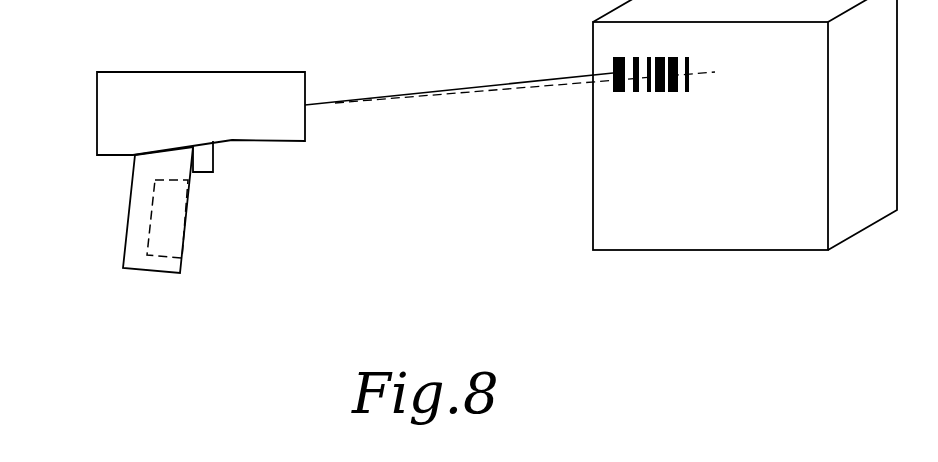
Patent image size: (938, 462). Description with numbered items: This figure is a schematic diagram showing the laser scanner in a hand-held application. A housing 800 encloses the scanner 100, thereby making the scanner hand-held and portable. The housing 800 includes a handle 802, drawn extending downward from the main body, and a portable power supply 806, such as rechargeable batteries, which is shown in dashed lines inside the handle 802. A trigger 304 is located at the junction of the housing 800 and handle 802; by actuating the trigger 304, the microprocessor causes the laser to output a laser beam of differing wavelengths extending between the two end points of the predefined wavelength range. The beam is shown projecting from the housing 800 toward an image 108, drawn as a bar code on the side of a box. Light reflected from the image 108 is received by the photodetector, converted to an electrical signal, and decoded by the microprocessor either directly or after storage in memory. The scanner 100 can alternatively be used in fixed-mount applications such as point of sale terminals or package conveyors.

The scanner 100 is at (296, 262).
The housing 800 is at (242, 71).
The handle 802 is at (128, 222).
The trigger 304 is at (213, 160).
The portable power supply 806 is at (168, 228).
The image 108 is at (658, 57).